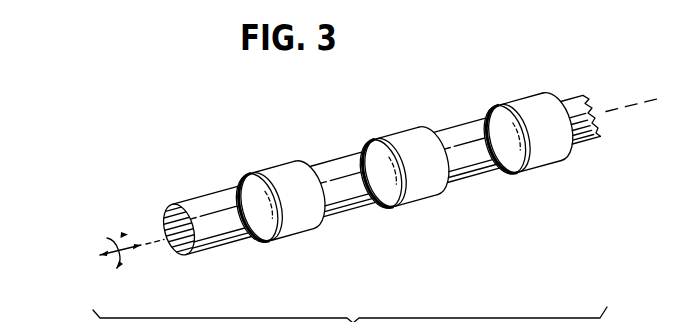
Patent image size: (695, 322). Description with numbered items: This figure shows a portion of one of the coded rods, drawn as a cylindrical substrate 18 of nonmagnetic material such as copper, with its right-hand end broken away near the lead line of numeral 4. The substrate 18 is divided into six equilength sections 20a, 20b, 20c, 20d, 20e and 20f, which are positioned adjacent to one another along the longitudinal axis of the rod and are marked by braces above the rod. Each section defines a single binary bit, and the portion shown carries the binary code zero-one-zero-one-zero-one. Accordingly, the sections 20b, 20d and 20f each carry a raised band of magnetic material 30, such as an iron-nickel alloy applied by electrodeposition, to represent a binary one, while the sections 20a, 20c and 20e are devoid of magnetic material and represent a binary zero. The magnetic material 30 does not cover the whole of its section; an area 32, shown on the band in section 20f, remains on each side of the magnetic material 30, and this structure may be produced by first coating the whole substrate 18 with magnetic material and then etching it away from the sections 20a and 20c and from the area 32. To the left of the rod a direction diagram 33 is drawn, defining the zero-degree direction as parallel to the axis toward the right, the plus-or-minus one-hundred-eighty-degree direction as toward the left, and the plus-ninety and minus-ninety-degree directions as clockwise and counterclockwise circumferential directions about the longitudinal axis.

The shaft 4 is at (600, 101).
The substrate 18 is at (326, 163).
The section 20a is at (231, 156).
The section 20b is at (297, 138).
The section 20c is at (355, 118).
The section 20d is at (420, 101).
The section 20e is at (477, 85).
The section 20f is at (525, 121).
The magnetic material 30 is at (402, 150).
The area 32 is at (512, 158).
The direction diagram 33 is at (135, 273).